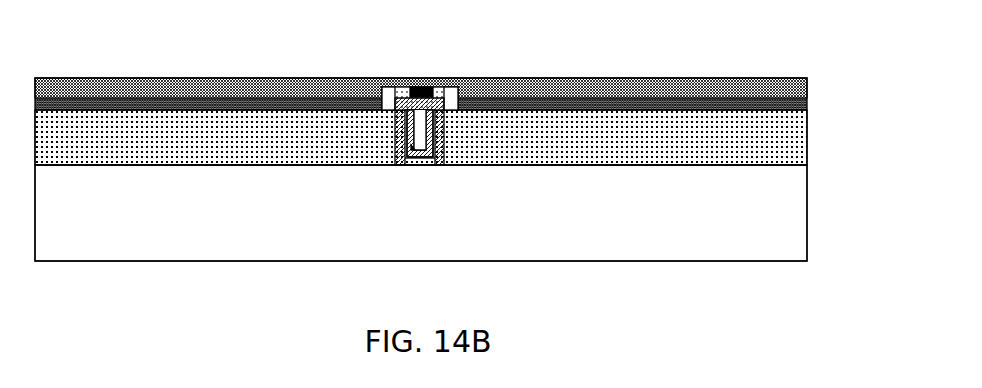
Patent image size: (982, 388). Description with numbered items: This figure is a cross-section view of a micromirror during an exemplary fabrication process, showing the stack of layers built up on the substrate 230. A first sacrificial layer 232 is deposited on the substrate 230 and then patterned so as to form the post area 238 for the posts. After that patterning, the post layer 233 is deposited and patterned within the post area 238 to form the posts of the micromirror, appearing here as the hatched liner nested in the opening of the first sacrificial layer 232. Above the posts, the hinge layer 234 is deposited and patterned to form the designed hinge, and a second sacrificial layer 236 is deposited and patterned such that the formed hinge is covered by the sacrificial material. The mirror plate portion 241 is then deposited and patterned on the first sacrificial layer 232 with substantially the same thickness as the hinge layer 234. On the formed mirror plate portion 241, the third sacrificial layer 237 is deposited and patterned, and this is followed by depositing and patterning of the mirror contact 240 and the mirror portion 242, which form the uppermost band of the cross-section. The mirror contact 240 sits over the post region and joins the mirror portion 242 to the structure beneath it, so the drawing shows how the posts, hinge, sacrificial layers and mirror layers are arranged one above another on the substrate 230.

The substrate 230 is at (613, 245).
The first sacrificial layer 232 is at (560, 158).
The post layer 233 is at (430, 165).
The hinge layer 234 is at (450, 78).
The second sacrificial layer 236 is at (378, 78).
The third sacrificial layer 237 is at (400, 90).
The post area 238 is at (410, 165).
The mirror contact 240 is at (420, 87).
The mirror plate portion 241 is at (807, 109).
The mirror portion 242 is at (618, 79).